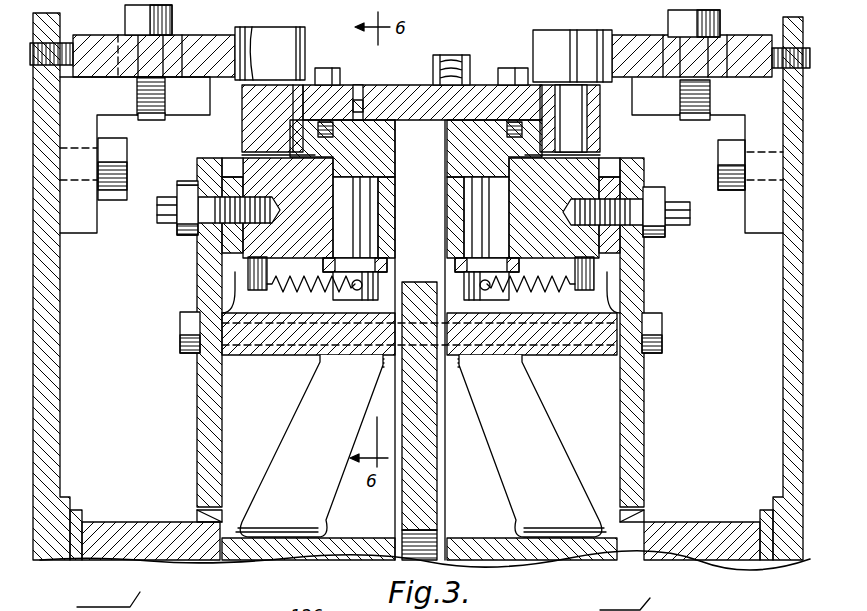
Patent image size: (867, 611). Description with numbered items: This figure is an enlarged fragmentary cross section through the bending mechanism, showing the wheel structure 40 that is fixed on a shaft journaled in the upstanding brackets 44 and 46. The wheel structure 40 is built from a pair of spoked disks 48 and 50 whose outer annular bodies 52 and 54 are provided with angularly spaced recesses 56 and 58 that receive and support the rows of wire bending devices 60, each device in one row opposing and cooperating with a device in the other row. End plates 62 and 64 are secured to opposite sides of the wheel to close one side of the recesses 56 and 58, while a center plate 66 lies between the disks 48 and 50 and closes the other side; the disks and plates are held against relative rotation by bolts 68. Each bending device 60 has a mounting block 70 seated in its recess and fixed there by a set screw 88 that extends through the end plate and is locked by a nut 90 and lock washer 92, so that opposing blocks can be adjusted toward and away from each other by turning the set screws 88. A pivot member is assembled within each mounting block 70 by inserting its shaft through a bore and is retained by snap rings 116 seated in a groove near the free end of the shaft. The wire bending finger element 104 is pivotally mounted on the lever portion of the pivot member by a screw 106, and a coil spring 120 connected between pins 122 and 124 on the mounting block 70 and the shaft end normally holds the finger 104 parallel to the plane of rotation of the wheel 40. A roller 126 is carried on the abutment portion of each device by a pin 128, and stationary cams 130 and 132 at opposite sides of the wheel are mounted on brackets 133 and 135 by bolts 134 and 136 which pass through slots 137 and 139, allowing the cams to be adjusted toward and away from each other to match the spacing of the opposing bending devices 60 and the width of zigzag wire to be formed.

The wheel structure 40 is at (648, 401).
The upstanding bracket 44 is at (63, 395).
The upstanding bracket 46 is at (793, 333).
The spoked disk 48 is at (300, 443).
The spoked disk 50 is at (545, 427).
The outer annular body 52 is at (248, 358).
The outer annular body 54 is at (585, 357).
The recess 56 is at (233, 310).
The recess 58 is at (600, 312).
The wire bending device 60 is at (228, 150).
The end plate 62 is at (203, 470).
The end plate 64 is at (645, 443).
The center plate 66 is at (417, 516).
The bolt 68 is at (191, 325).
The mounting block 70 is at (247, 240).
The set screw 88 is at (166, 223).
The nut 90 is at (183, 186).
The lock washer 92 is at (192, 183).
The wire bending finger element 104 is at (397, 96).
The screw 106 is at (333, 70).
The snap ring 116 is at (323, 265).
The coil spring 120 is at (293, 296).
The pin 122 is at (421, 286).
The pin 124 is at (357, 290).
The roller 126 is at (554, 50).
The pin 128 is at (270, 45).
The stationary cam 130 is at (206, 44).
The stationary cam 132 is at (646, 42).
The bracket 133 is at (82, 233).
The bolt 134 is at (147, 128).
The bracket 135 is at (760, 233).
The bolt 136 is at (686, 118).
The slot 137 is at (103, 42).
The slot 139 is at (731, 57).